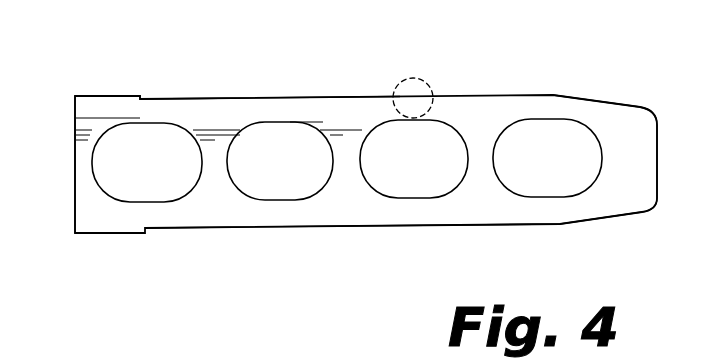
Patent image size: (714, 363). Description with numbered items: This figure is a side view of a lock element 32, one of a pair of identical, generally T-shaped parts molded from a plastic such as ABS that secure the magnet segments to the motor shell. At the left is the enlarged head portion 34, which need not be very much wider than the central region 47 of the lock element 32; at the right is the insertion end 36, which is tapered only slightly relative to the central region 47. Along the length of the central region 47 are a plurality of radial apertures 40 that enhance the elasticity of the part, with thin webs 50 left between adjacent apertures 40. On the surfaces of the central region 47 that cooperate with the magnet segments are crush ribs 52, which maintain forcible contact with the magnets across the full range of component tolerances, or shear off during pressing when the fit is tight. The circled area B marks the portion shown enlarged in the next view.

The lock element 32 is at (134, 97).
The crush ribs 52 is at (280, 98).
The detail region B is at (425, 77).
The insertion end 36 is at (618, 104).
The head portion 34 is at (75, 210).
The webs 50 is at (212, 163).
The radial apertures 40 is at (286, 200).
The central region 47 is at (353, 227).